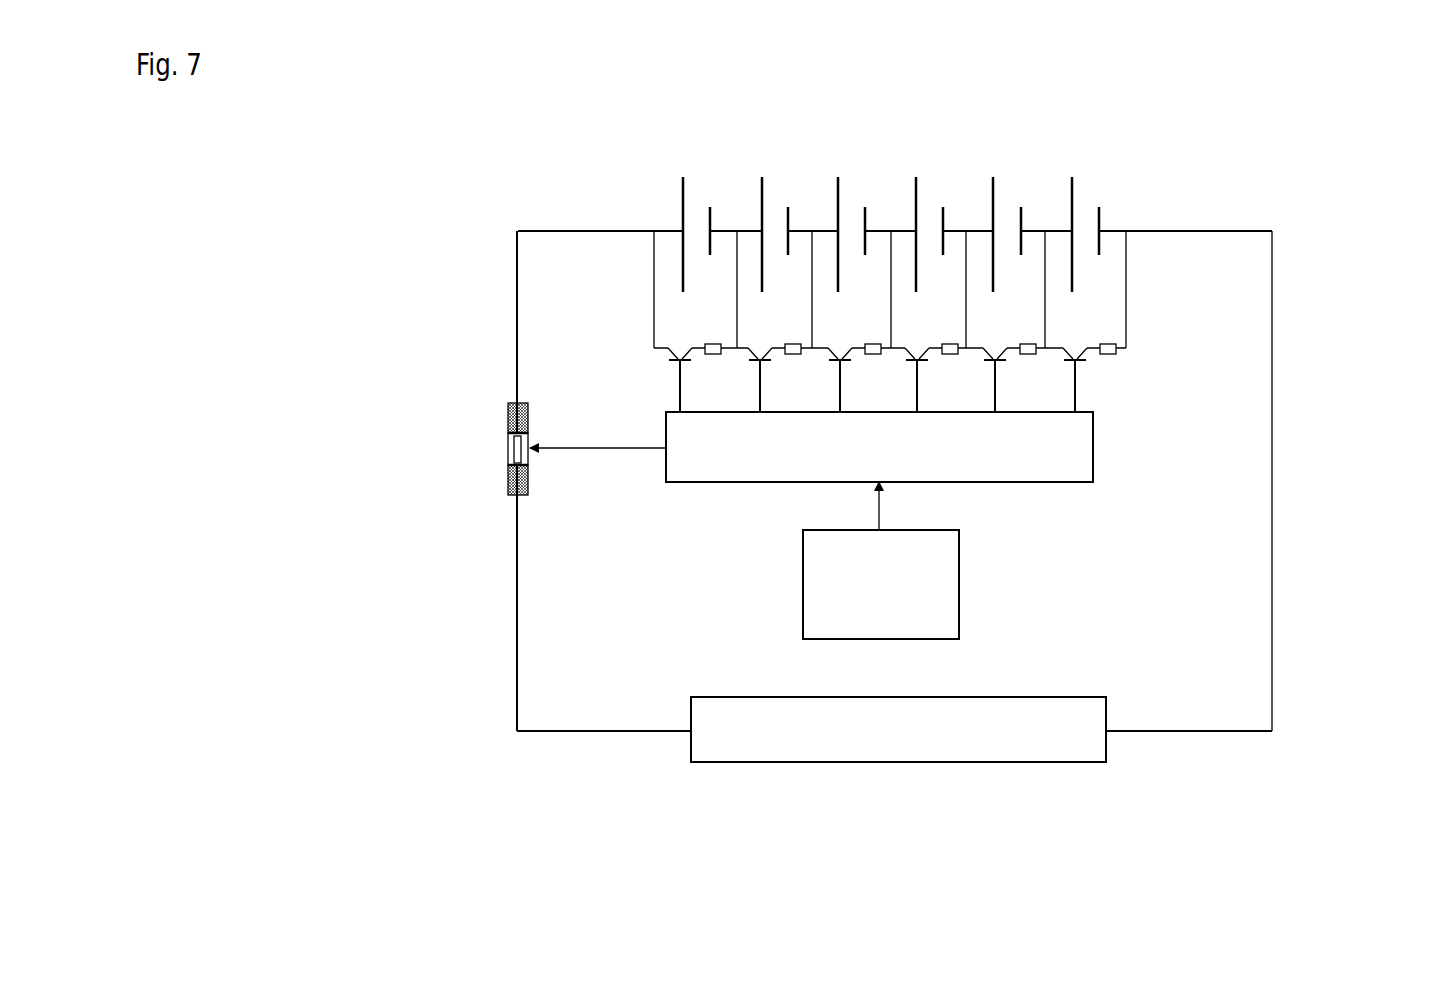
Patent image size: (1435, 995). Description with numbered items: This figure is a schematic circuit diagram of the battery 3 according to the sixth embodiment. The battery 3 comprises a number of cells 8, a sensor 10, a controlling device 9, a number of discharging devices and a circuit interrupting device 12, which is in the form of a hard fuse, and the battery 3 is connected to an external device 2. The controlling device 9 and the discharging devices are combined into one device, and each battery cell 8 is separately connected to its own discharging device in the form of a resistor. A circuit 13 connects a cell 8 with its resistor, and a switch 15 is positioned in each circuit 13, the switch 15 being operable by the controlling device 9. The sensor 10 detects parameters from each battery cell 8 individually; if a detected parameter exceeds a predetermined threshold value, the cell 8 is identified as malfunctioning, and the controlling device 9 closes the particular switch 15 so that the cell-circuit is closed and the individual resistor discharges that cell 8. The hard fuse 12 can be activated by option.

The external device 2 is at (958, 740).
The battery 3 is at (1322, 280).
The cell 8 is at (1160, 188).
The controlling device 9 is at (703, 468).
The sensor 10 is at (943, 612).
The circuit interrupting device 12 is at (515, 450).
The circuit 13 is at (517, 645).
The switch 15 is at (655, 347).